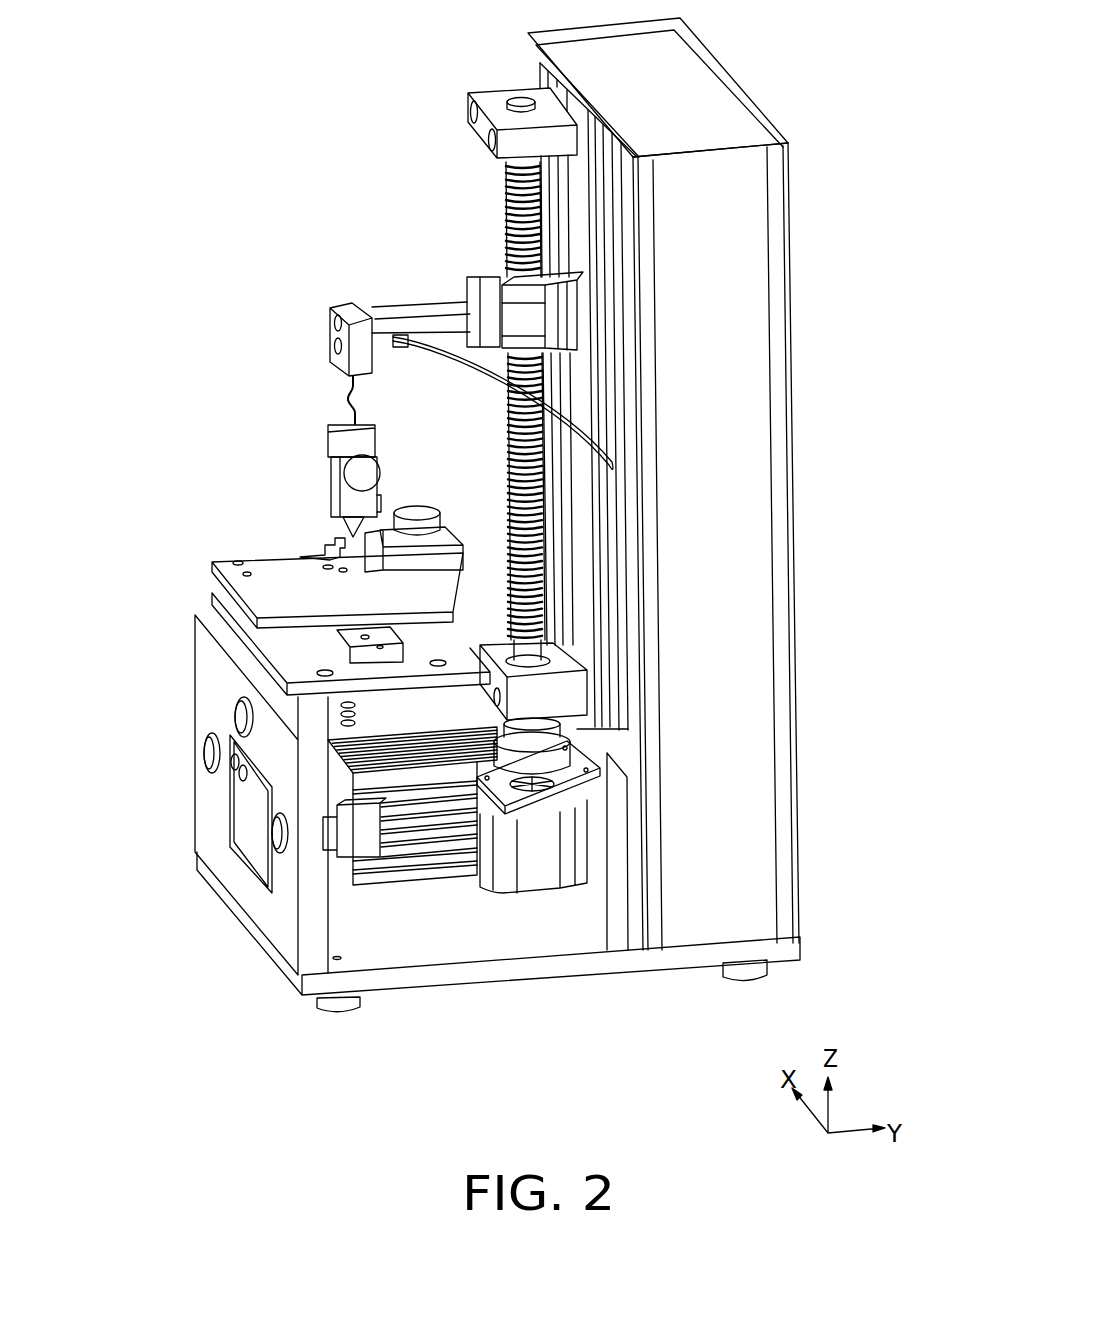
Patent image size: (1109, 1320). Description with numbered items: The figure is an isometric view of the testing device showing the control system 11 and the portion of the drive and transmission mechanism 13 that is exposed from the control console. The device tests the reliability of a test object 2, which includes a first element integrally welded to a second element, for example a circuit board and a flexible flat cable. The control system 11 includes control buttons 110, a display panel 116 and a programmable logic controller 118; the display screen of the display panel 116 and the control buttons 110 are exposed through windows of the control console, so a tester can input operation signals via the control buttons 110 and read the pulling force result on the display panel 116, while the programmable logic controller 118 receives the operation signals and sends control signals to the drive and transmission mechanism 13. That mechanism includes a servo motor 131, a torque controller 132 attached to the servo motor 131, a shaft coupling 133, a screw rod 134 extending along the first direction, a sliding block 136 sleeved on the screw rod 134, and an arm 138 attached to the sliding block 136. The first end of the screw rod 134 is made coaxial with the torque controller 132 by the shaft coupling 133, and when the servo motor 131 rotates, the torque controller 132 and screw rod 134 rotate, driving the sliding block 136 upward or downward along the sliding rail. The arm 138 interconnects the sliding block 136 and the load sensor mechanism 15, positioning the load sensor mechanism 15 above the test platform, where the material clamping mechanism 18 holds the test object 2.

The control system 11 is at (444, 802).
The control buttons 110 is at (272, 843).
The display panel 116 is at (248, 808).
The programmable logic controller 118 is at (370, 880).
The drive and transmission mechanism 13 is at (671, 484).
The servo motor 131 is at (677, 817).
The torque controller 132 is at (543, 757).
The shaft coupling 133 is at (558, 692).
The screw rod 134 is at (547, 433).
The sliding block 136 is at (523, 298).
The arm 138 is at (540, 268).
The load sensor mechanism 15 is at (343, 305).
The material clamping mechanism 18 is at (268, 560).
The test object 2 is at (333, 537).